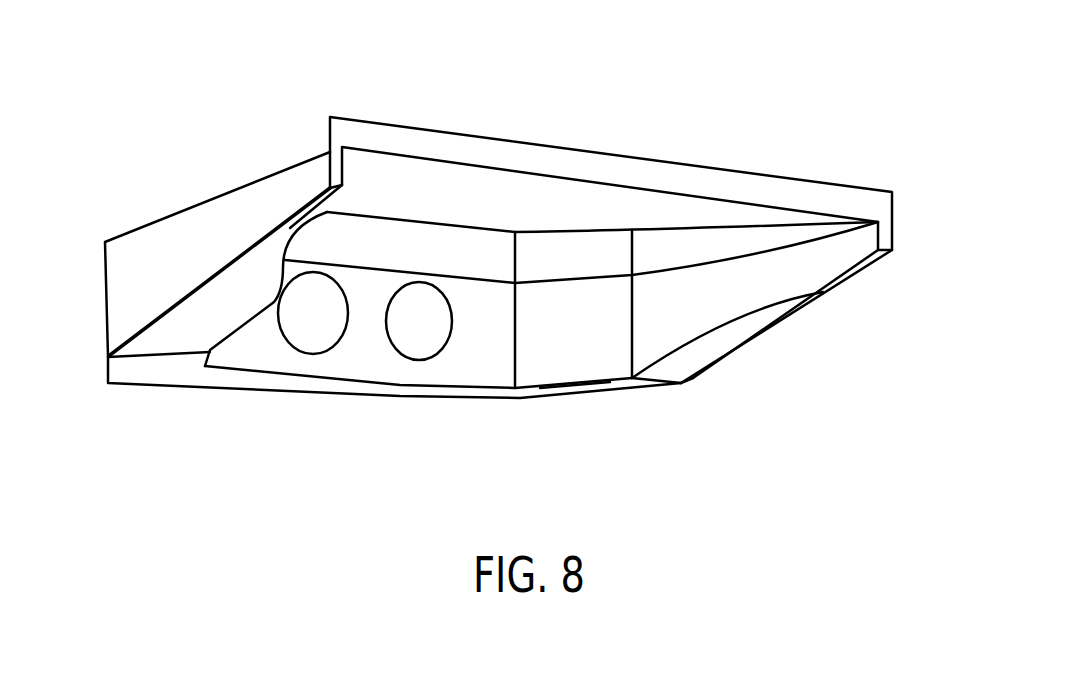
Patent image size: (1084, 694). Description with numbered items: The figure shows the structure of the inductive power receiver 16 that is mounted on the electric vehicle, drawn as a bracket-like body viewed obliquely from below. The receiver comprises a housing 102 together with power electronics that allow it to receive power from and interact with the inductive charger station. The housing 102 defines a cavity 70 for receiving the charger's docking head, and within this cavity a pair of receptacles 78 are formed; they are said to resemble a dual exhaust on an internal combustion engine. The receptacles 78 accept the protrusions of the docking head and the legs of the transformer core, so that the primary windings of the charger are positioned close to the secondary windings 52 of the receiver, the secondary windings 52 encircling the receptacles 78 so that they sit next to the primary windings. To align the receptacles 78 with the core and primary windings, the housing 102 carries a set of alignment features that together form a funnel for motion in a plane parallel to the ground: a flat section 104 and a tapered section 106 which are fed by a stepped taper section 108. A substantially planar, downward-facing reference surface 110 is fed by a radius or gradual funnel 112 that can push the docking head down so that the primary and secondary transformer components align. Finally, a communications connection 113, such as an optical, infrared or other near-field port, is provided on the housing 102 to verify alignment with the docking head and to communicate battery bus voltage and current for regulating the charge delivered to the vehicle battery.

The inductive power receiver 16 is at (501, 273).
The secondary windings 52 is at (272, 333).
The cavity 70 is at (452, 388).
The receptacles 78 is at (315, 330).
The housing 102 is at (855, 275).
The flat section 104 is at (683, 352).
The tapered section 106 is at (572, 385).
The stepped taper section 108 is at (750, 300).
The reference surface 110 is at (330, 242).
The gradual funnel 112 is at (435, 193).
The communications connection 113 is at (368, 295).